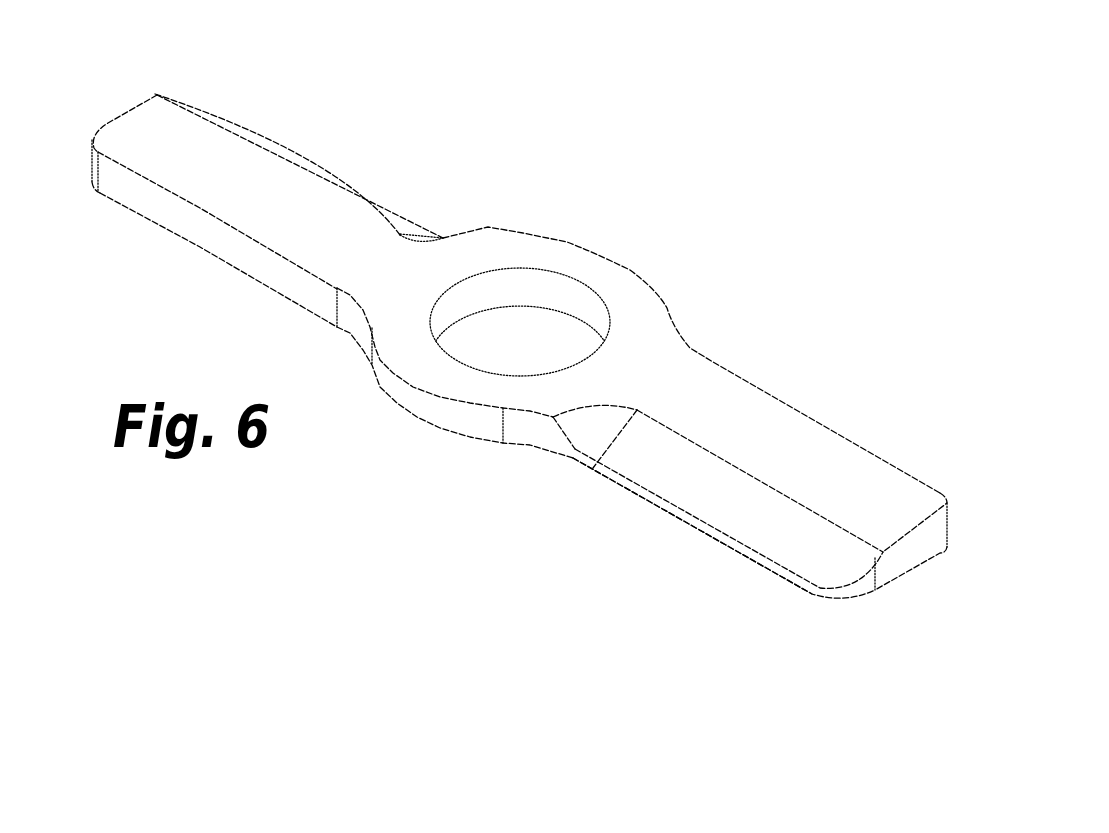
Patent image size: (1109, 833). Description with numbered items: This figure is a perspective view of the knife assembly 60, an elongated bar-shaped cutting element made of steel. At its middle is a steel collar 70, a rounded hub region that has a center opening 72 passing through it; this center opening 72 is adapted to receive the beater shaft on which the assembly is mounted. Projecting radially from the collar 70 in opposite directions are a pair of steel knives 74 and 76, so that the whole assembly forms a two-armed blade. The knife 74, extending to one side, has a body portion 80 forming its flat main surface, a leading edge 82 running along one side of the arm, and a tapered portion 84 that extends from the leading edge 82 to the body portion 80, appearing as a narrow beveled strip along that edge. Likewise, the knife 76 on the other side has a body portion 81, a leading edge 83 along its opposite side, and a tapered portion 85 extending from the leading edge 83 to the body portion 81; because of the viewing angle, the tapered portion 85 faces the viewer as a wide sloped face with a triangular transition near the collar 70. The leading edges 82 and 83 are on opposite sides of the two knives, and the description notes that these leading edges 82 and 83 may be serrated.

The knife assembly 60 is at (676, 232).
The steel collar 70 is at (473, 298).
The center opening 72 is at (520, 322).
The knife 74 is at (267, 180).
The knife 76 is at (739, 459).
The body portion 80 is at (151, 160).
The body portion 81 is at (832, 472).
The leading edge 82 is at (357, 185).
The leading edge 83 is at (707, 535).
The tapered portion 84 is at (275, 150).
The tapered portion 85 is at (652, 475).